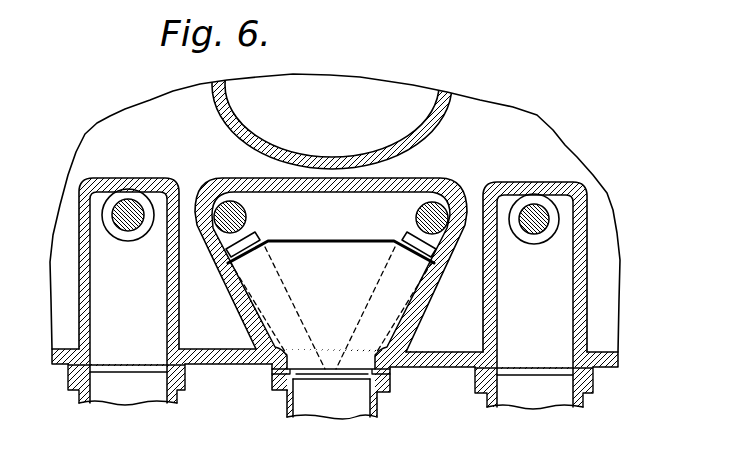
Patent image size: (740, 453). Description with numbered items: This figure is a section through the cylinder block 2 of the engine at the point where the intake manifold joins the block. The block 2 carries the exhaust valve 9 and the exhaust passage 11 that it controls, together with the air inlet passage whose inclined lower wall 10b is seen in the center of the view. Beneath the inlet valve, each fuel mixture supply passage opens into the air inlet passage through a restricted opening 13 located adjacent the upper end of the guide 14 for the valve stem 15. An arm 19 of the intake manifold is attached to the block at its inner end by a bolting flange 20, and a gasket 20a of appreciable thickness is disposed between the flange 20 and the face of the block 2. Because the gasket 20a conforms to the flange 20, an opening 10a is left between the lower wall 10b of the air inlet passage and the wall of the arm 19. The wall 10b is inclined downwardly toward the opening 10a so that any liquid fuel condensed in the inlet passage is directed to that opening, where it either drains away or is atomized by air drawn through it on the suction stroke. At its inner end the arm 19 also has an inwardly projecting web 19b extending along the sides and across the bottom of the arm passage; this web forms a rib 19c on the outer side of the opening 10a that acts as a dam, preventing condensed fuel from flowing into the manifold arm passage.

The cylinder block 2 is at (620, 365).
The exhaust valve 9 is at (334, 84).
The opening 10a is at (329, 369).
The lower wall of passage 10b is at (267, 300).
The exhaust passage 11 is at (158, 310).
The restricted opening 13 is at (348, 240).
The guide 14 is at (255, 242).
The valve stem 15 is at (246, 219).
The arm 19 is at (288, 414).
The inwardly projecting web 19b is at (378, 406).
The rib 19c is at (337, 376).
The bolting flange 20 is at (274, 391).
The gasket 20a is at (275, 372).